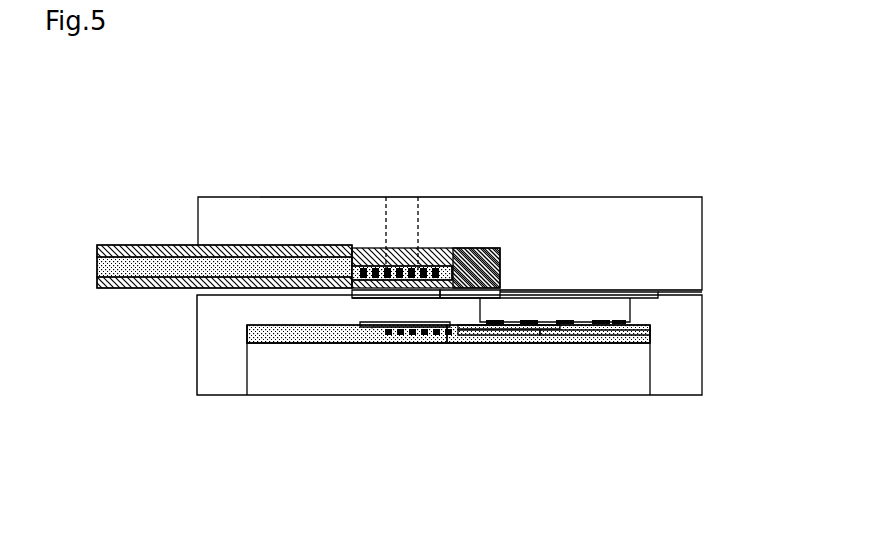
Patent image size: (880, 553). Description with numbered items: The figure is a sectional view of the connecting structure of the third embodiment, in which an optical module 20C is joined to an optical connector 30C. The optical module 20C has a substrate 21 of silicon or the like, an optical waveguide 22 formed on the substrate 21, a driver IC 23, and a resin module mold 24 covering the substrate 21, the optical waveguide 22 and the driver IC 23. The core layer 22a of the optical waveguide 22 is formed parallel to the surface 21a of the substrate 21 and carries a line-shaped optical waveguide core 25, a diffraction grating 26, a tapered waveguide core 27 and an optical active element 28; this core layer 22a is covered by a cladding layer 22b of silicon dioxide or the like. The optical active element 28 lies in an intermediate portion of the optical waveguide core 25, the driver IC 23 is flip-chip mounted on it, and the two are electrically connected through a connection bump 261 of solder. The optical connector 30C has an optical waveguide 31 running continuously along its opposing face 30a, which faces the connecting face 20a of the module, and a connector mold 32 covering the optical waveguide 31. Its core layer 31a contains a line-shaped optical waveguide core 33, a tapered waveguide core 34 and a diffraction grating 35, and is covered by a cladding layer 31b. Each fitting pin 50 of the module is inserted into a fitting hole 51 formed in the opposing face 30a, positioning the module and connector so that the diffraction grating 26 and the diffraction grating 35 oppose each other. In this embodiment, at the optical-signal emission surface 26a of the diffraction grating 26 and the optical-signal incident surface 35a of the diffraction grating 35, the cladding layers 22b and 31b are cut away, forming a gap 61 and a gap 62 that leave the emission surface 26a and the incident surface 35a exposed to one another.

The optical waveguide 31 is at (196, 223).
The core layer 31a is at (105, 265).
The cladding layer 31b is at (124, 251).
The optical waveguide core 33 is at (224, 233).
The connector mold 32 is at (268, 213).
The tapered waveguide core 34 is at (364, 298).
The diffraction grating 35 is at (376, 248).
The optical-signal incident surface 35a is at (500, 270).
The fitting pin 50 is at (428, 232).
The fitting hole 51 is at (418, 215).
The gap 62 is at (432, 306).
The driver IC 23 is at (583, 290).
The connection bump 261 is at (612, 322).
The optical connector 30C is at (704, 227).
The connecting face 20a is at (685, 292).
The opposing face 30a is at (660, 296).
The surface 21a is at (655, 332).
The optical module 20C is at (704, 362).
The module mold 24 is at (197, 348).
The optical-signal emission surface 26a is at (388, 326).
The substrate 21 is at (290, 378).
The diffraction grating 26 is at (378, 340).
The gap 61 is at (415, 340).
The tapered waveguide core 27 is at (446, 340).
The optical waveguide core 25 is at (472, 340).
The core layer 22a is at (500, 342).
The cladding layer 22b is at (546, 342).
The optical waveguide 22 is at (448, 402).
The optical active element 28 is at (546, 345).